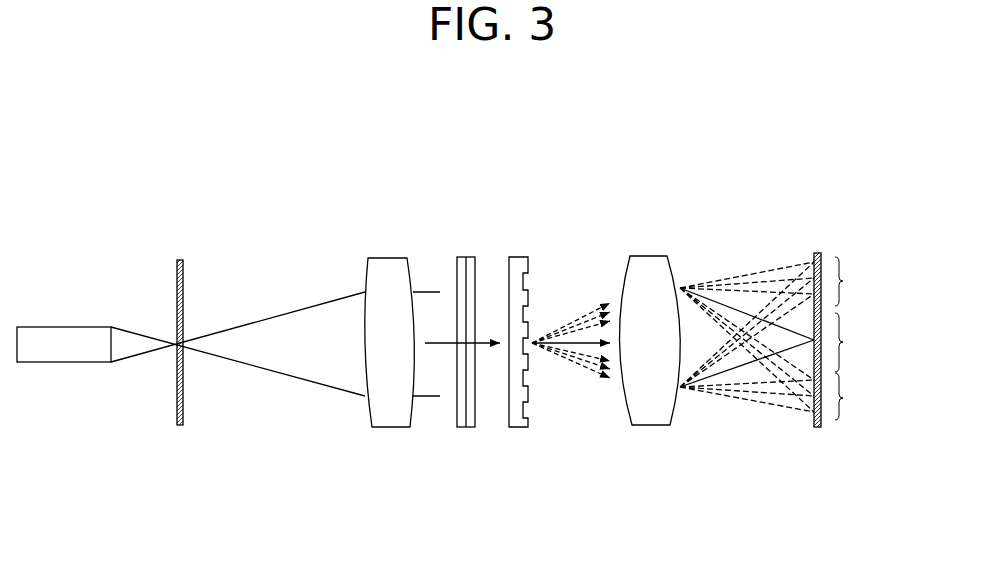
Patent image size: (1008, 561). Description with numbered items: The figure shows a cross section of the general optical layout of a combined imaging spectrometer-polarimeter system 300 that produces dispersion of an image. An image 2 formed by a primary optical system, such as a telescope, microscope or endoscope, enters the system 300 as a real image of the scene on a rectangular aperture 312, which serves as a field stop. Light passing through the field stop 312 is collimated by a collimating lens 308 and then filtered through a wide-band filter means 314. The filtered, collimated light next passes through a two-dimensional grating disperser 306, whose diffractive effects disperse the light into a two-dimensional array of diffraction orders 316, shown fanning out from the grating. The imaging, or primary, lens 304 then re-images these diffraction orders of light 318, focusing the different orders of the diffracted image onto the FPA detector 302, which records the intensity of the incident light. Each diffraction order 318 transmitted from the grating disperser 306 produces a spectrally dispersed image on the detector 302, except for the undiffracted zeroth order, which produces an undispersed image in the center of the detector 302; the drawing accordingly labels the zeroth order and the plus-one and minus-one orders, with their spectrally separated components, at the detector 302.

The combined imaging spectrometer-polarimeter system 300 is at (190, 149).
The image 2 is at (81, 362).
The rectangular aperture 312 is at (190, 331).
The collimating lens 308 is at (390, 427).
The wide-band filter means 314 is at (461, 427).
The 2D grating disperser 306 is at (518, 427).
The diffraction orders 316 is at (570, 371).
The imaging lens 304 is at (650, 425).
The diffraction orders of light 318 is at (745, 411).
The FPA detector 302 is at (818, 427).